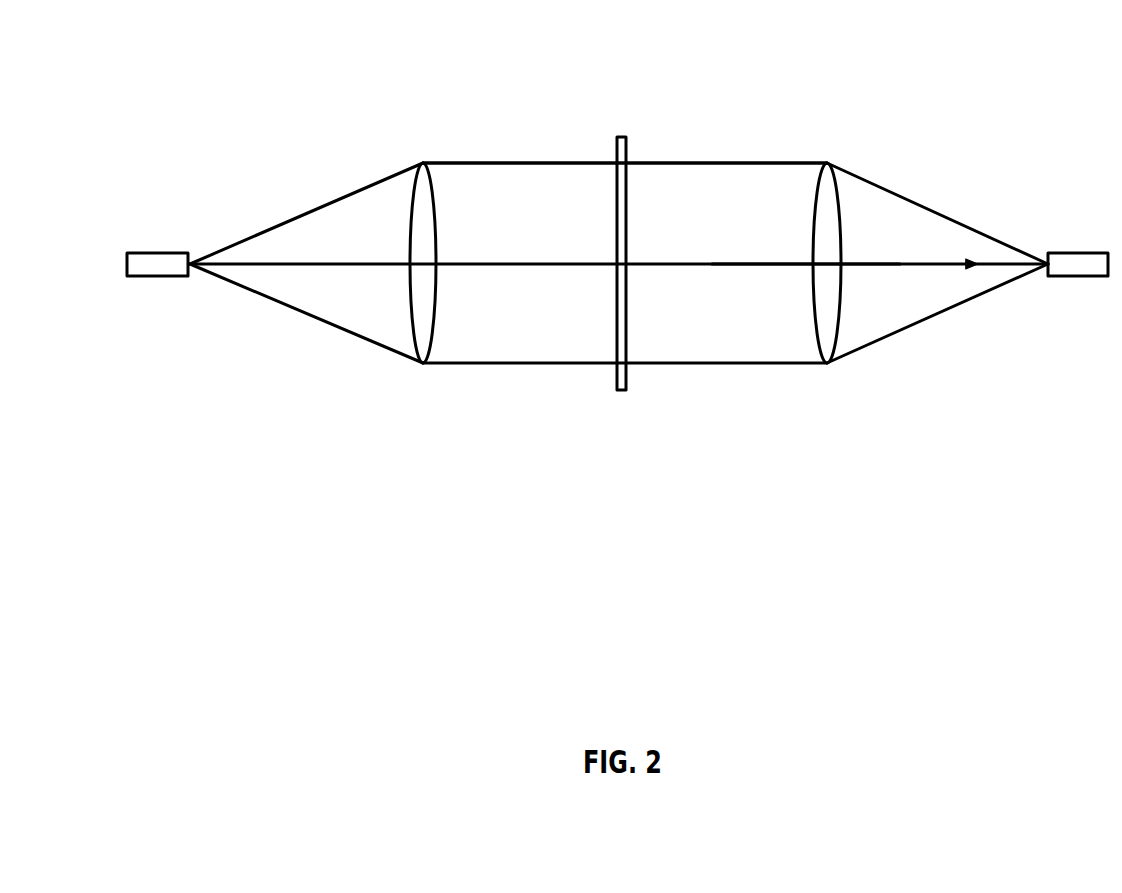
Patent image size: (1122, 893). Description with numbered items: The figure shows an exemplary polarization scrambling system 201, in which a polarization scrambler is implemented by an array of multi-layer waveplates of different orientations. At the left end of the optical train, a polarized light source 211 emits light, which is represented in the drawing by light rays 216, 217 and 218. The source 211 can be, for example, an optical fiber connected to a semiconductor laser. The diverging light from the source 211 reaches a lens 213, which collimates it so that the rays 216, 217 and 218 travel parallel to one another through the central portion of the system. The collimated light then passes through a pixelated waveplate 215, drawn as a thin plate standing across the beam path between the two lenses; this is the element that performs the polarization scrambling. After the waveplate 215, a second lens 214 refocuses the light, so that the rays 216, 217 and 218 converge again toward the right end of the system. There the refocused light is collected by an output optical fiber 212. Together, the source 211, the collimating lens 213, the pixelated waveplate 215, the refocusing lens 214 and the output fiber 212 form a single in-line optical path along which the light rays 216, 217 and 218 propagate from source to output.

The polarization scrambling system 201 is at (116, 63).
The polarized light source 211 is at (150, 277).
The output optical fiber 212 is at (1077, 253).
The lens 213 is at (433, 337).
The lens 214 is at (840, 212).
The pixelated waveplate 215 is at (627, 381).
The light ray 216 is at (490, 162).
The light ray 217 is at (937, 324).
The light ray 218 is at (712, 265).